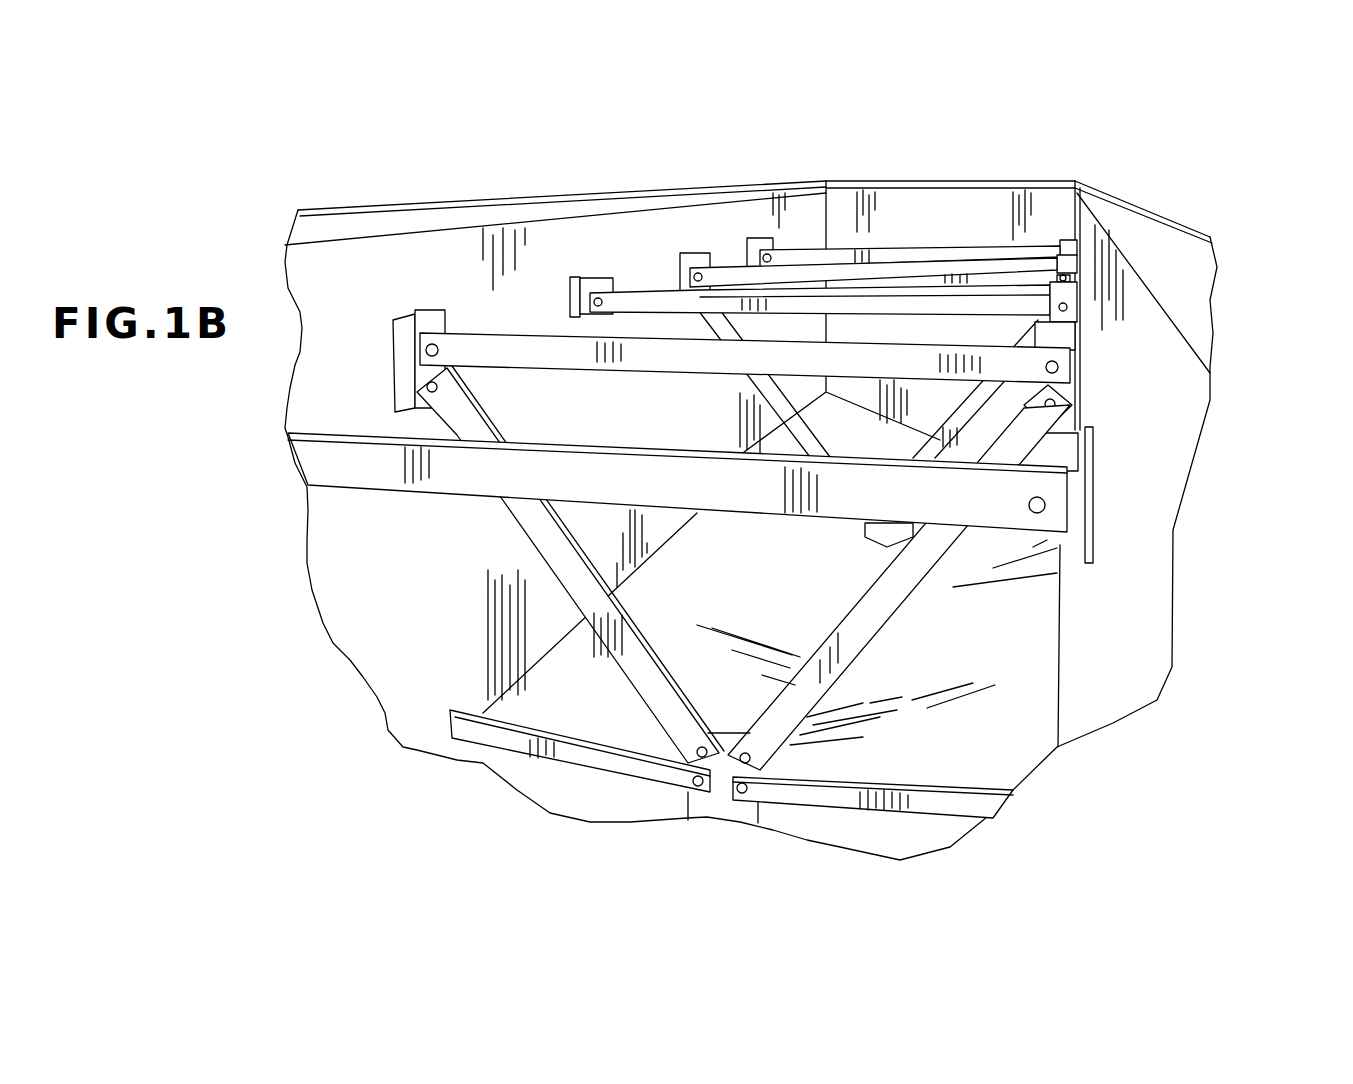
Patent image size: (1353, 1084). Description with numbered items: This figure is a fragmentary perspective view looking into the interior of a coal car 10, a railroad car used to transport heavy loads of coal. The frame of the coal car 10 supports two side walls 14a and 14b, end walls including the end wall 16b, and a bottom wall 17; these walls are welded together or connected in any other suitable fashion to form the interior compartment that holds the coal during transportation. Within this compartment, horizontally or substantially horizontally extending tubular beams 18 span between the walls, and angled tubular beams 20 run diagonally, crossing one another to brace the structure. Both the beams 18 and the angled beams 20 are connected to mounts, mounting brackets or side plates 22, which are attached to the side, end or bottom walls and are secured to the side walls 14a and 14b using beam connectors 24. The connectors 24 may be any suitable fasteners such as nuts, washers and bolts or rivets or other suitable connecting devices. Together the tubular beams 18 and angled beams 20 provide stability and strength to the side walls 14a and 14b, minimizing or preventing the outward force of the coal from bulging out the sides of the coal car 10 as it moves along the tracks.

The coal car 10 is at (423, 170).
The side wall 14a is at (1153, 247).
The side wall 14b is at (623, 203).
The end wall 16b is at (920, 213).
The bottom wall 17 is at (553, 797).
The tubular beam 18 is at (790, 357).
The angled beam 20 is at (790, 703).
The mounting bracket 22 is at (1052, 455).
The connector 24 is at (1045, 505).